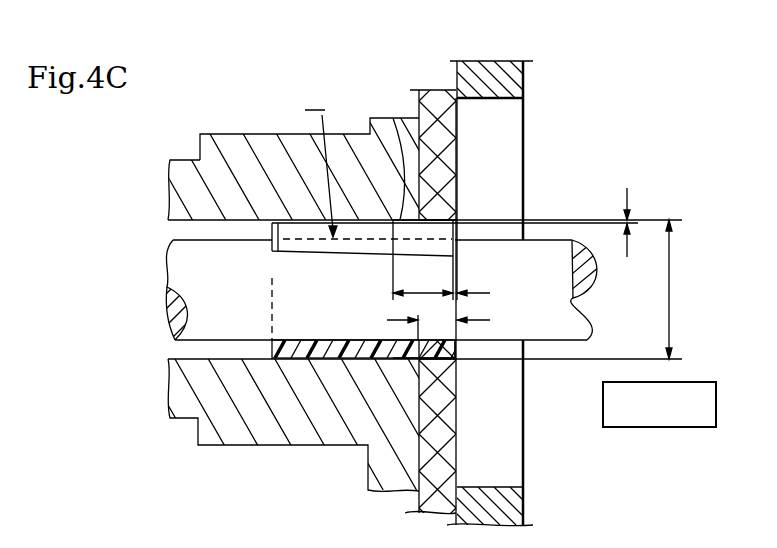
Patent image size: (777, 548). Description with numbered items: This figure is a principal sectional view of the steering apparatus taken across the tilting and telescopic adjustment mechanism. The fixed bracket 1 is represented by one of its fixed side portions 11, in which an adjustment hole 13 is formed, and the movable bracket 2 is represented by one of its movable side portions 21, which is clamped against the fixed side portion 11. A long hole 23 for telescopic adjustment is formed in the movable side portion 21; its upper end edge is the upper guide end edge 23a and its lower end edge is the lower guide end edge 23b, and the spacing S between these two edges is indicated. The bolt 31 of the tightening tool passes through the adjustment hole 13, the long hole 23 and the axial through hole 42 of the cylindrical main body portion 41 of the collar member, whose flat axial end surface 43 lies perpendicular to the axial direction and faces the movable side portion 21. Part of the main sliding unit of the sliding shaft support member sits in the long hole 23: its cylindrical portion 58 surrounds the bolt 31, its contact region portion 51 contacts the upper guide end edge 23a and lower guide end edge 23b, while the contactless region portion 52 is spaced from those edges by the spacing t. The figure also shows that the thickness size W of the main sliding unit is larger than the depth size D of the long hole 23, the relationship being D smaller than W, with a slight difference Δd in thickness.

The fixed bracket 1 is at (508, 277).
The movable bracket 2 is at (442, 88).
The fixed side portion 11 is at (525, 96).
The adjustment hole 13 is at (487, 146).
The movable side portion 21 is at (414, 101).
The long hole for telescopic adjustment 23 is at (424, 221).
The upper guide end edge 23a is at (440, 224).
The lower guide end edge 23b is at (450, 338).
The bolt 31 is at (218, 328).
The cylindrical main body portion 41 is at (218, 133).
The axial through hole 42 is at (208, 235).
The axial end surface 43 is at (410, 441).
The contact region portion 51 is at (442, 220).
The contactless region portion 52 is at (393, 118).
The cylindrical portion 58 is at (310, 233).